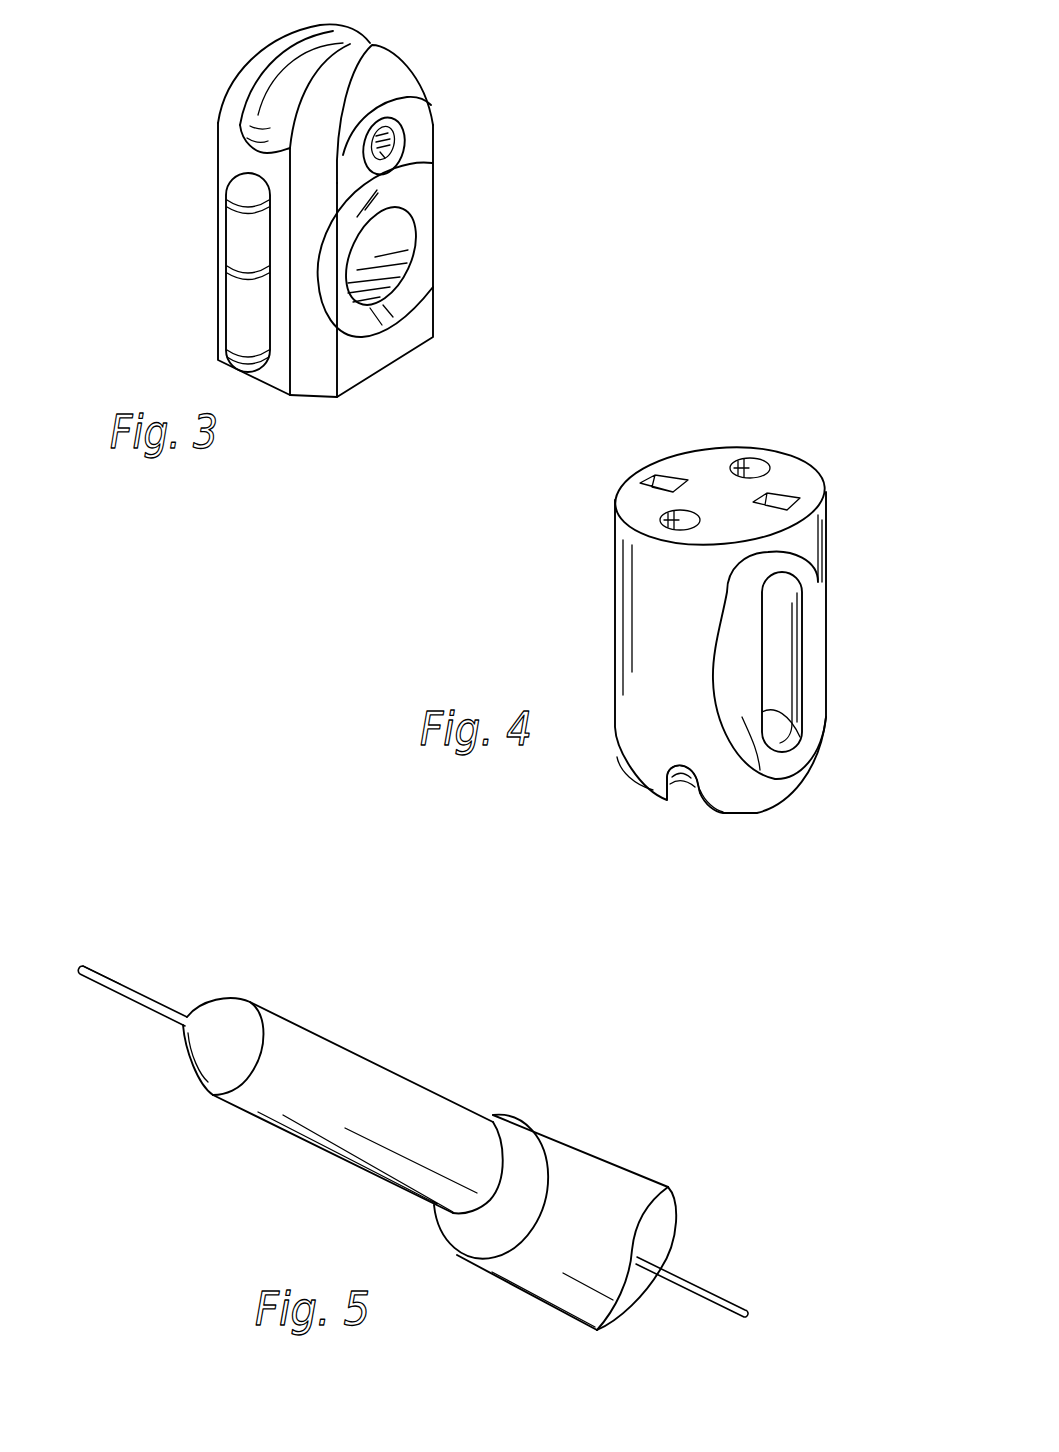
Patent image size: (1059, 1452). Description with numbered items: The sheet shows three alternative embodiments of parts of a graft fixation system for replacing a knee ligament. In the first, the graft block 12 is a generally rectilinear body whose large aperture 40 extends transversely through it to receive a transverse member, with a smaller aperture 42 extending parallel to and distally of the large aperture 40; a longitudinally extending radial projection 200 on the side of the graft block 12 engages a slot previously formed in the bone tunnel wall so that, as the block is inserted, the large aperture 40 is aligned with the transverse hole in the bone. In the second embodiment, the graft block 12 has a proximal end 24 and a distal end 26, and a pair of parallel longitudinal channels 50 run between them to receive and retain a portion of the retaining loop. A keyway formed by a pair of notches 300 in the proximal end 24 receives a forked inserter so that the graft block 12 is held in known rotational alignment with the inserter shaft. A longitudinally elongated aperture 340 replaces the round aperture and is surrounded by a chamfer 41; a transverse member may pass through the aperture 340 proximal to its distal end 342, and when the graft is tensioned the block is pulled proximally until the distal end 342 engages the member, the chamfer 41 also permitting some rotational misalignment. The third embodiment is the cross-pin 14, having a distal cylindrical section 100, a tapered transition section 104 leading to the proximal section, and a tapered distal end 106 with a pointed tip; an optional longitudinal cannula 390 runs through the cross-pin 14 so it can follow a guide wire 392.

In FIG. 3, the graft block 12 is at (130, 80).
In FIG. 4, the graft block 12 is at (502, 595).
In FIG. 3, the radial projection 200 is at (228, 240).
In FIG. 3, the smaller aperture 42 is at (373, 150).
In FIG. 3, the large aperture 40 is at (407, 242).
In FIG. 4, the proximal end 24 is at (790, 477).
In FIG. 4, the notches 300 is at (663, 477).
In FIG. 4, the longitudinal channels 50 is at (732, 463).
In FIG. 4, the longitudinally elongated aperture 340 is at (787, 670).
In FIG. 4, the distal end of the aperture 342 is at (778, 745).
In FIG. 4, the distal end 26 is at (658, 798).
In FIG. 4, the chamfer 41 is at (760, 770).
In FIG. 5, the cross-pin 14 is at (212, 1188).
In FIG. 5, the longitudinal cannula 390 is at (180, 1028).
In FIG. 5, the guide wire 392 is at (100, 970).
In FIG. 5, the distal cylindrical section 100 is at (357, 1080).
In FIG. 5, the tapered distal end 106 is at (223, 1028).
In FIG. 5, the tapered transition section 104 is at (505, 1117).